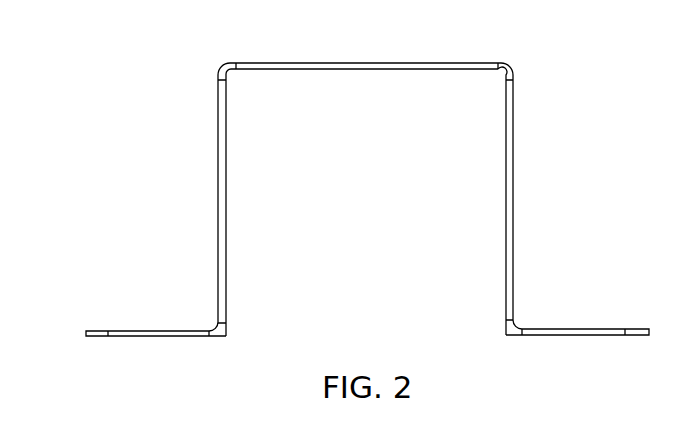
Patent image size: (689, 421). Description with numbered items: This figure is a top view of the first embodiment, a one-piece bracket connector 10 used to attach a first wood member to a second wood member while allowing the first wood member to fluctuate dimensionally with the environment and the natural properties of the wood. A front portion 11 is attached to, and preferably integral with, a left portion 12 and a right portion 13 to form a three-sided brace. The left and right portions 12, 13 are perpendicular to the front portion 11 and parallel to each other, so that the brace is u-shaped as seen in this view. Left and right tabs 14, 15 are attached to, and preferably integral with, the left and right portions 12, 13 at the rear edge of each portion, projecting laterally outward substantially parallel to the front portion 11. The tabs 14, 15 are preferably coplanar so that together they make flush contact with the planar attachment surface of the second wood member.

The bracket connector 10 is at (113, 98).
The front portion 11 is at (338, 62).
The left portion 12 is at (513, 200).
The right portion 13 is at (218, 202).
The left tab 14 is at (588, 333).
The right tab 15 is at (145, 336).